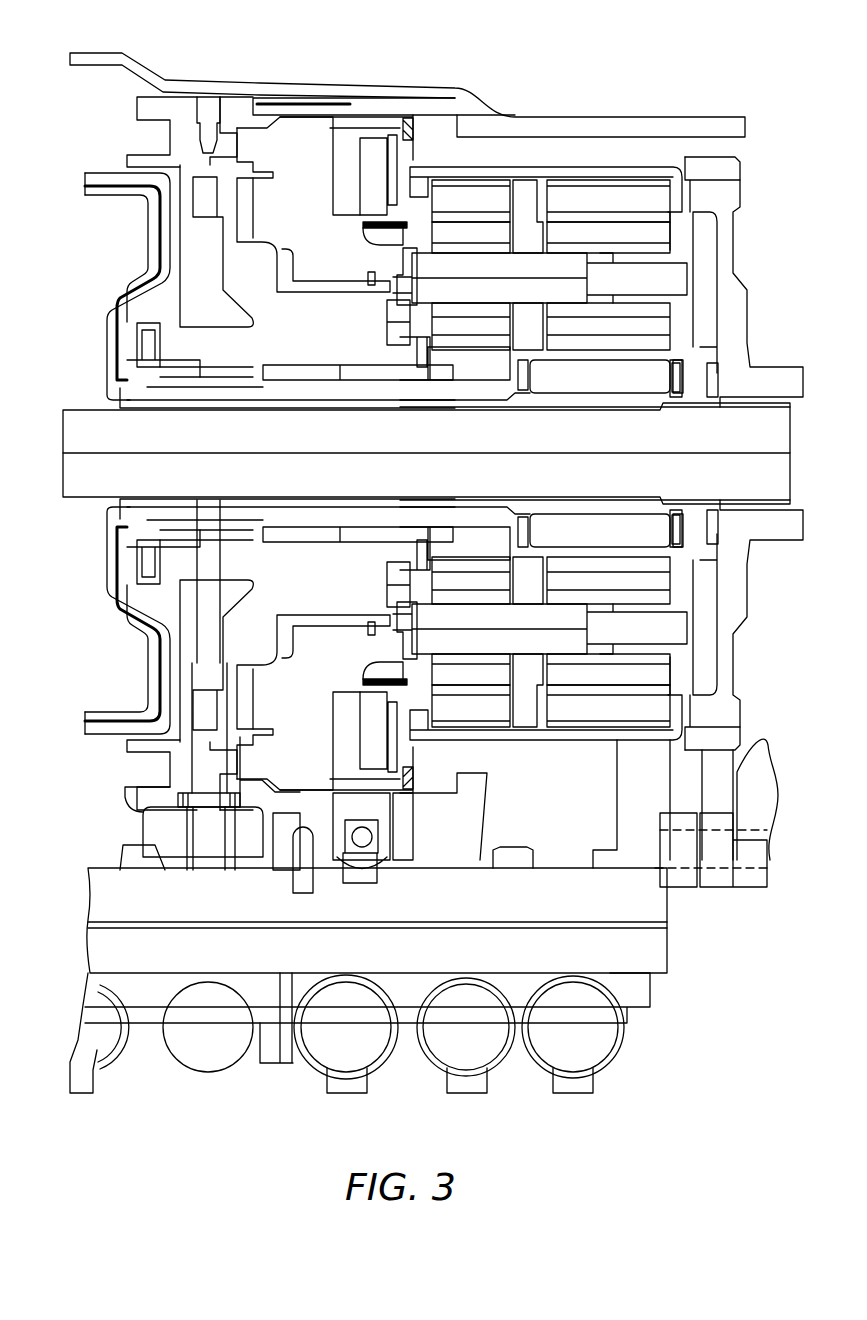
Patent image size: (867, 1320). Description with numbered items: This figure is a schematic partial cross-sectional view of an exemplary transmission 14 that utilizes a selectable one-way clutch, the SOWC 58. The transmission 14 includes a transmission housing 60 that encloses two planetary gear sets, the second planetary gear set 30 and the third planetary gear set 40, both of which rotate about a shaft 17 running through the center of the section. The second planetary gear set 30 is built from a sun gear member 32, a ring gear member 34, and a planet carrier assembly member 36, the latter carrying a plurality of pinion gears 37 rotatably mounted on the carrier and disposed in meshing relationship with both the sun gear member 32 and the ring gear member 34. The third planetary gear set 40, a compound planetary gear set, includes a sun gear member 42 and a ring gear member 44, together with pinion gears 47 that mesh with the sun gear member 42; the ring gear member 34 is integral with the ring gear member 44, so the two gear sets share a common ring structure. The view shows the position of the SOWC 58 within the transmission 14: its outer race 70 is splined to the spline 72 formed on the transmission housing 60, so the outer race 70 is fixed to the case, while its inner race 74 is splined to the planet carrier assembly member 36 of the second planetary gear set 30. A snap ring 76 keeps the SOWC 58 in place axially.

The transmission 14 is at (699, 93).
The shaft 17 is at (186, 448).
The second planetary gear set 30 is at (437, 418).
The sun gear member 32 is at (470, 362).
The ring gear member 34 is at (472, 197).
The planet carrier assembly member 36 is at (388, 320).
The pinion gears 37 is at (497, 230).
The third planetary gear set 40 is at (590, 414).
The sun gear member 42 is at (604, 388).
The ring gear member 44 is at (597, 198).
The pinion gears 47 is at (618, 230).
The SOWC 58 is at (324, 150).
The transmission housing 60 is at (250, 83).
The outer race 70 is at (380, 116).
The spline 72 is at (318, 116).
The inner race 74 is at (377, 235).
The snap ring 76 is at (410, 117).